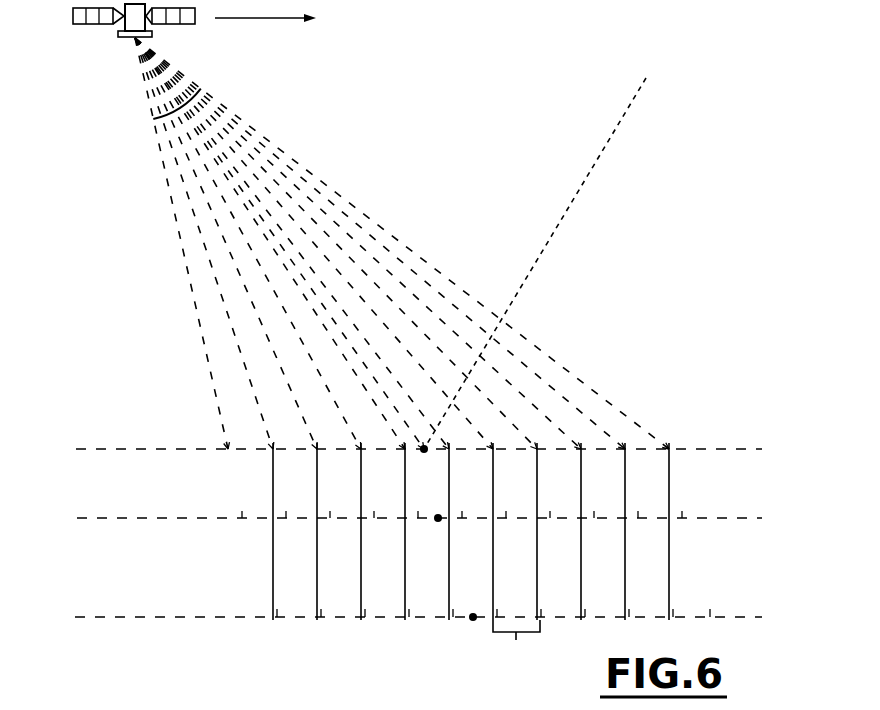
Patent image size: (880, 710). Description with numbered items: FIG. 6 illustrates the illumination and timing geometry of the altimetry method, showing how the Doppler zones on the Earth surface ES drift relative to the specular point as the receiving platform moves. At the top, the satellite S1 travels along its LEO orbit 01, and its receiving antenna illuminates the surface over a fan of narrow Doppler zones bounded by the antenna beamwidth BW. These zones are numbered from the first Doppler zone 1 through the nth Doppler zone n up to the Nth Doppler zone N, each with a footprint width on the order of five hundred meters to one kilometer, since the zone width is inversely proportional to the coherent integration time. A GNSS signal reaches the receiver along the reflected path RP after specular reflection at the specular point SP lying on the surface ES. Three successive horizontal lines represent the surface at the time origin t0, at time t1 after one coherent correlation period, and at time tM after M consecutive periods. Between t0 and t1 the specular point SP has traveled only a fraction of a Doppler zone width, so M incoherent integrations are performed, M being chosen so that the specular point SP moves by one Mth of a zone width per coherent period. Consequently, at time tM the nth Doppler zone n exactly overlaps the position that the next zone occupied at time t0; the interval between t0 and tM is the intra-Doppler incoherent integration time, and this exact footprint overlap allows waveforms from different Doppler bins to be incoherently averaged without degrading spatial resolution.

The satellite S1 is at (118, 37).
The LEO orbit 01 is at (283, 20).
The beamwidth of the receiving antenna BW is at (150, 128).
The reflected path RP is at (613, 137).
The Earth surface ES is at (762, 449).
The specular point SP is at (446, 548).
The origin of the time reference t0 is at (63, 450).
The time after one coherent correlation period t1 is at (64, 518).
The end time of intra-Doppler incoherent integration tM is at (62, 618).
The first Doppler zone 1 is at (265, 522).
The nth Doppler zone n is at (481, 522).
The Nth Doppler zone N is at (656, 522).